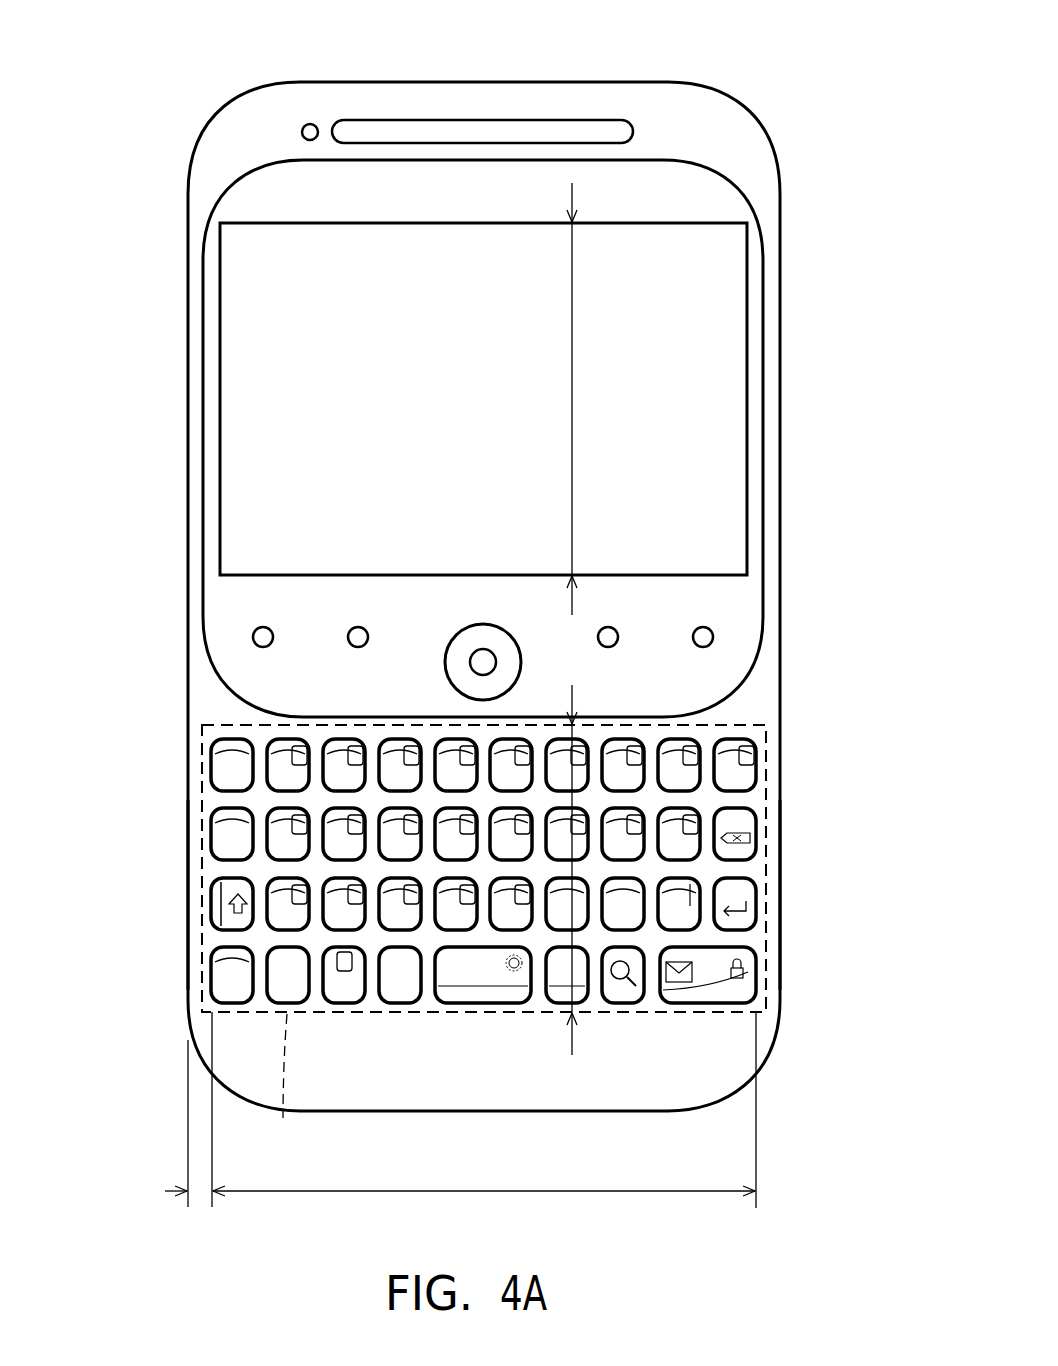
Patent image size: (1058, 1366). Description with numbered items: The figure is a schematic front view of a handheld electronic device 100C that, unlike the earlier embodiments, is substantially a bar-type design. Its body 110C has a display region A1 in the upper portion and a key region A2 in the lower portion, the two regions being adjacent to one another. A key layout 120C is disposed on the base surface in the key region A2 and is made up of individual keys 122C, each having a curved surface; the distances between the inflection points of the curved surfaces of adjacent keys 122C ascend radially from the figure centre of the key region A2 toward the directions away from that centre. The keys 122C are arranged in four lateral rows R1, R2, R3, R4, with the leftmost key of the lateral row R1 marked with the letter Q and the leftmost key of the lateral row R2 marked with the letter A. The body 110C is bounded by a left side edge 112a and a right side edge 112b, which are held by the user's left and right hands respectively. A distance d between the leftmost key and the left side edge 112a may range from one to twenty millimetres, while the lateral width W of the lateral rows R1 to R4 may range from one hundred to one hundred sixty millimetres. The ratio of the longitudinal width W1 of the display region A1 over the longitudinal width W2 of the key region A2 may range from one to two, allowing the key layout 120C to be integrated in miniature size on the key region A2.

The handheld electronic device 100C is at (476, 621).
The body 110C is at (187, 275).
The display region A1 is at (345, 195).
The key layout 120C is at (203, 722).
The key 122C is at (208, 757).
The first lateral row R1 is at (410, 746).
The second lateral row R2 is at (207, 832).
The third lateral row R3 is at (207, 902).
The fourth lateral row R4 is at (207, 967).
The left side edge 112a is at (187, 866).
The right side edge 112b is at (781, 867).
The key region A2 is at (290, 1084).
The longitudinal width of the display region W1 is at (591, 402).
The longitudinal width of the key region W2 is at (591, 869).
The lateral width of the lateral rows W is at (484, 1120).
The distance between the leftmost key and the left side edge d is at (184, 1134).